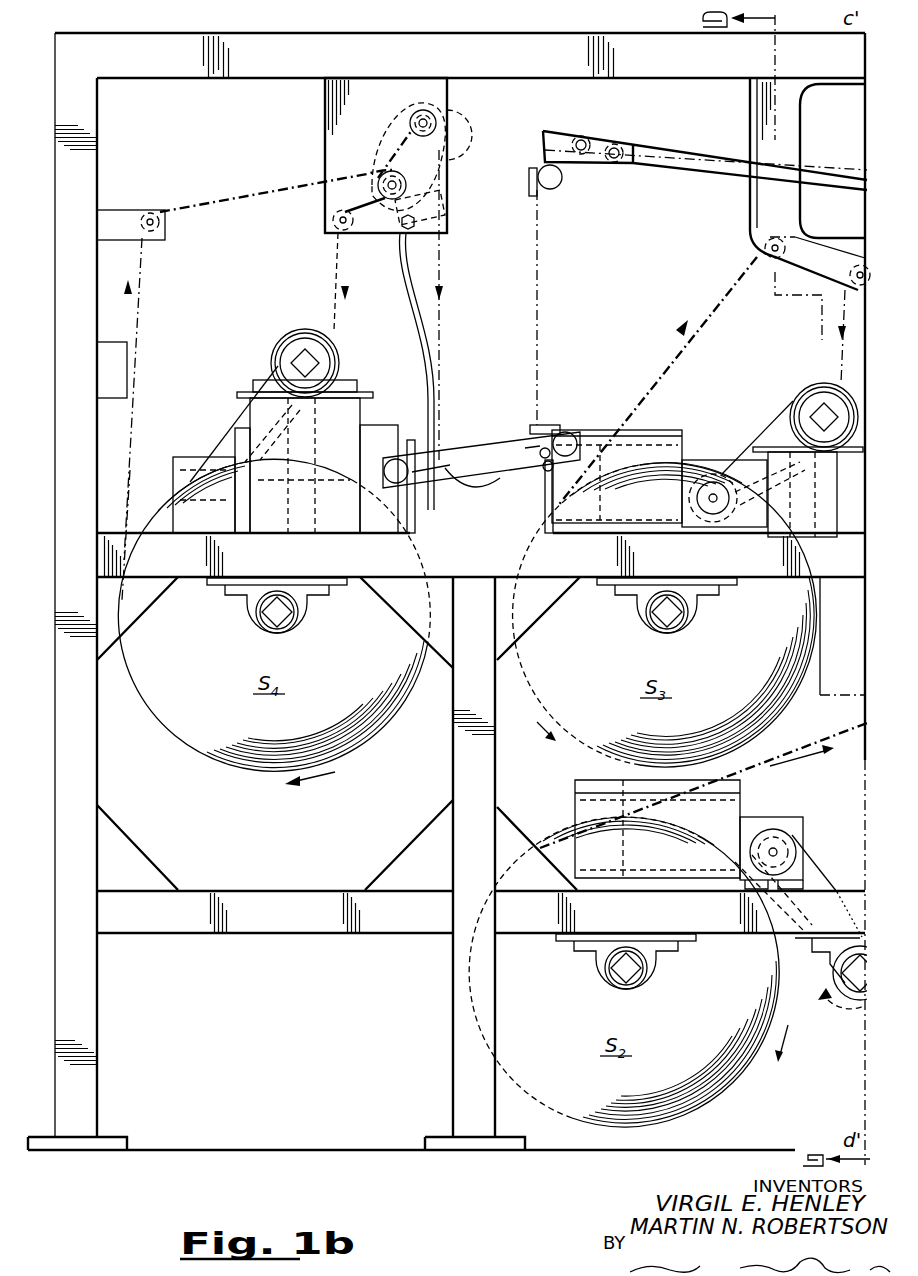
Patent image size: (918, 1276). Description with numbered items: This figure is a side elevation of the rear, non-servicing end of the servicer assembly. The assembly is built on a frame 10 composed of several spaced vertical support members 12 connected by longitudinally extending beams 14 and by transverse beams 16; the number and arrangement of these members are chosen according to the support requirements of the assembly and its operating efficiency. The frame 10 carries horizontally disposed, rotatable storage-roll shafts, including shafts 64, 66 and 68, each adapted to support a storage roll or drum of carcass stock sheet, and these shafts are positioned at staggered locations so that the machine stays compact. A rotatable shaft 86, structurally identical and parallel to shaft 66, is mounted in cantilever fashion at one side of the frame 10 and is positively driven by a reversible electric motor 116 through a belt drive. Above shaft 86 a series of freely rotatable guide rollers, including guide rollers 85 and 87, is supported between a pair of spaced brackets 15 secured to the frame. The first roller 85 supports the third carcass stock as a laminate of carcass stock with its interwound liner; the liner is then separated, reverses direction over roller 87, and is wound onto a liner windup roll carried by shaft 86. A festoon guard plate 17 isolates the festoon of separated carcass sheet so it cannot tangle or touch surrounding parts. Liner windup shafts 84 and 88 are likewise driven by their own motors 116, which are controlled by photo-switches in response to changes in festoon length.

The frame 10 is at (97, 1034).
The vertical support members 12 is at (90, 797).
The longitudinally extending beams 14 is at (456, 48).
The brackets 15 is at (757, 148).
The transverse beams 16 is at (399, 432).
The festoon guard plate 17 is at (426, 350).
The rotatable shaft 64 is at (606, 985).
The rotatable shaft 66 is at (660, 636).
The rotatable shaft 68 is at (263, 630).
The shaft 84 is at (858, 992).
The guide roller 85 is at (765, 247).
The rotatable shaft 86 is at (824, 394).
The guide roller 87 is at (851, 272).
The shaft 88 is at (305, 334).
The reversible electric motor 116 is at (577, 825).